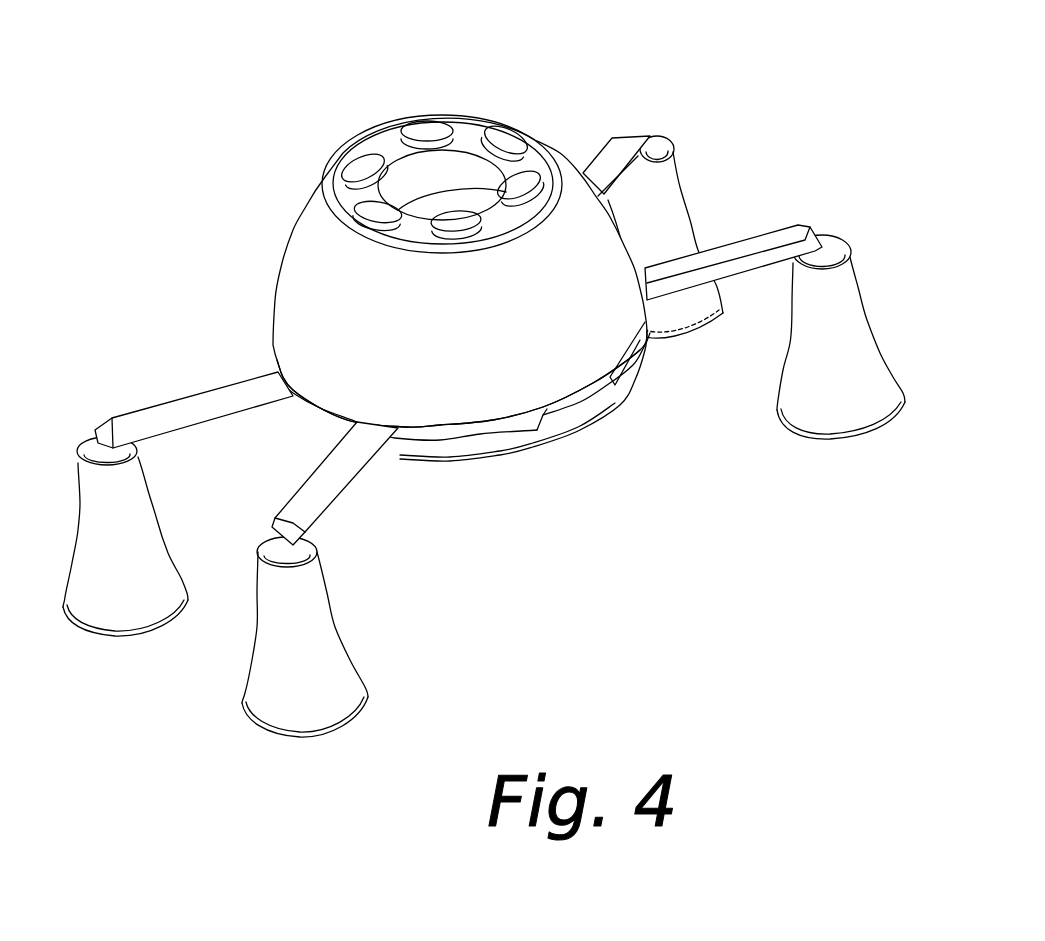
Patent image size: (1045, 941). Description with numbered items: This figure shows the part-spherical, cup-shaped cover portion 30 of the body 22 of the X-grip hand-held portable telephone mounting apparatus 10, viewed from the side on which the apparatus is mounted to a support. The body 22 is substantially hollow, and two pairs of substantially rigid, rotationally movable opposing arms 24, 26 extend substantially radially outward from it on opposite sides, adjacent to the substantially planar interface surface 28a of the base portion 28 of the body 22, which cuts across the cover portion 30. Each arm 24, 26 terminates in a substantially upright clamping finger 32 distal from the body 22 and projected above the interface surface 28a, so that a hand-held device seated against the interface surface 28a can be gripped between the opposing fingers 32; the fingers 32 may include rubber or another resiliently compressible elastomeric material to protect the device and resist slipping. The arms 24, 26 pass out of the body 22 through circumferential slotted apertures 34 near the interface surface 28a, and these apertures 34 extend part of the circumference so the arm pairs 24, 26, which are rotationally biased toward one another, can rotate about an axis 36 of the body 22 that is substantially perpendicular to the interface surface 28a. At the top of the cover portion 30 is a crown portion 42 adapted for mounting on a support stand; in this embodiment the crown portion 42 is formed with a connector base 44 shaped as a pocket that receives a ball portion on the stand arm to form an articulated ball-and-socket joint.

The mounting apparatus 10 is at (786, 96).
The body 22 is at (293, 275).
The arm 24 is at (608, 153).
The arm 26 is at (752, 247).
The base portion 28 is at (583, 415).
The interface surface 28a is at (530, 452).
The cover portion 30 is at (463, 377).
The clamping finger 32 is at (675, 250).
The slotted aperture 34 is at (630, 365).
The axis 36 is at (445, 200).
The crown portion 42 is at (378, 135).
The connector base 44 is at (468, 147).